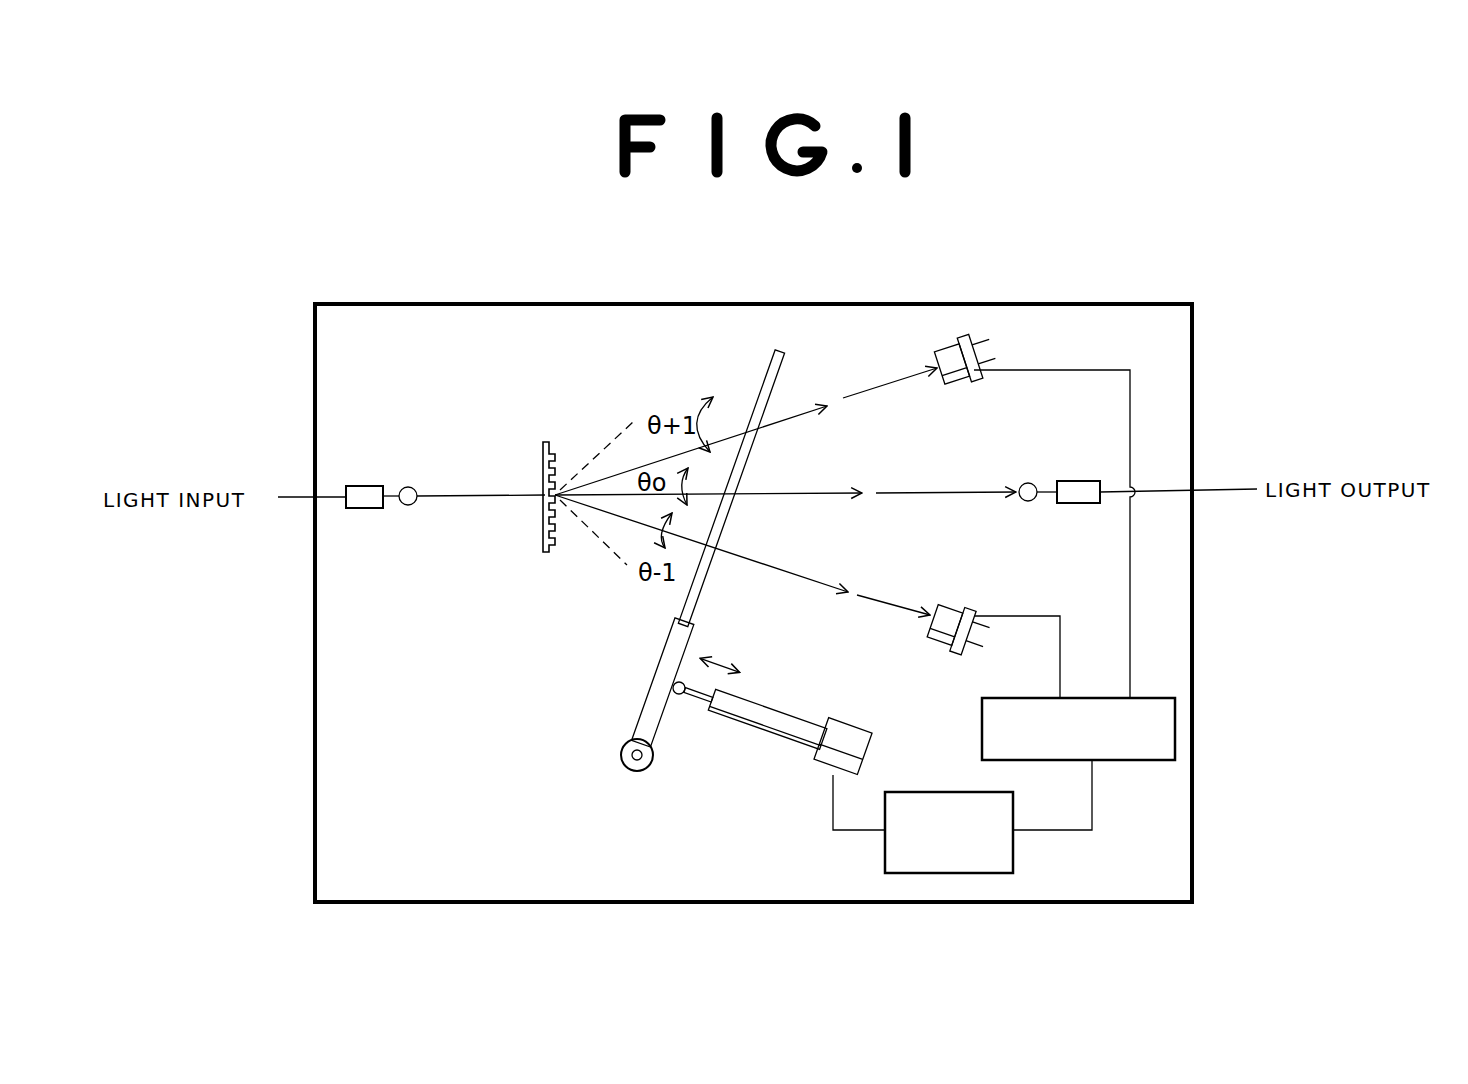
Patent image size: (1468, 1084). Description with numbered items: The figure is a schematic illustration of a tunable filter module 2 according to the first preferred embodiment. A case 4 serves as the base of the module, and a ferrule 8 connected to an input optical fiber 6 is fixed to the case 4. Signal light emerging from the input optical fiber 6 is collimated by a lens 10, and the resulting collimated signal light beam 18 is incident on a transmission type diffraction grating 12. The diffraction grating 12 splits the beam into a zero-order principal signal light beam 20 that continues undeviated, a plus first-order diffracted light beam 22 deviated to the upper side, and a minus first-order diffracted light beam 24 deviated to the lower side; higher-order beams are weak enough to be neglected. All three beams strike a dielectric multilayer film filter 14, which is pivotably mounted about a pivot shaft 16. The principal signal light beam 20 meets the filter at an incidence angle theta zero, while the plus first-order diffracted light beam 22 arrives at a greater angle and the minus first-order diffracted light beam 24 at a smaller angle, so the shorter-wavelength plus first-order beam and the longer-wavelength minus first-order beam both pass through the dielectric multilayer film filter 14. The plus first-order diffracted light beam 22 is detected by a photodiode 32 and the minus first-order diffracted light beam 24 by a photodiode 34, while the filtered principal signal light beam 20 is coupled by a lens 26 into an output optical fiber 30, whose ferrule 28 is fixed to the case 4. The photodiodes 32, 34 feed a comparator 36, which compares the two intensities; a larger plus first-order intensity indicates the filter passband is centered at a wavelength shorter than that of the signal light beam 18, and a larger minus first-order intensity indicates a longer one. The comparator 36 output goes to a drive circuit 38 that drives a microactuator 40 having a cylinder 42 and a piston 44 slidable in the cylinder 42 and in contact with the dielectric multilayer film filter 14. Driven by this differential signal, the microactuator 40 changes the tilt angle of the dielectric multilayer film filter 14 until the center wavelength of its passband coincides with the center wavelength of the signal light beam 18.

The tunable filter module 2 is at (607, 302).
The case 4 is at (474, 304).
The input optical fiber 6 is at (290, 496).
The ferrule 8 is at (357, 510).
The lens 10 is at (408, 486).
The transmission type diffraction grating 12 is at (545, 527).
The dielectric multilayer film filter 14 is at (770, 377).
The pivot shaft 16 is at (621, 755).
The collimated signal light beam 18 is at (480, 493).
The principal signal light beam 20 is at (803, 492).
The plus first-order diffracted light beam 22 is at (806, 410).
The minus first-order diffracted light beam 24 is at (800, 575).
The lens 26 is at (1022, 482).
The ferrule 28 is at (1078, 480).
The output optical fiber 30 is at (1218, 488).
The photodiode 32 is at (946, 345).
The photodiode 34 is at (947, 602).
The comparator 36 is at (1130, 760).
The drive circuit 38 is at (925, 792).
The microactuator 40 is at (781, 700).
The cylinder 42 is at (770, 730).
The piston 44 is at (698, 700).